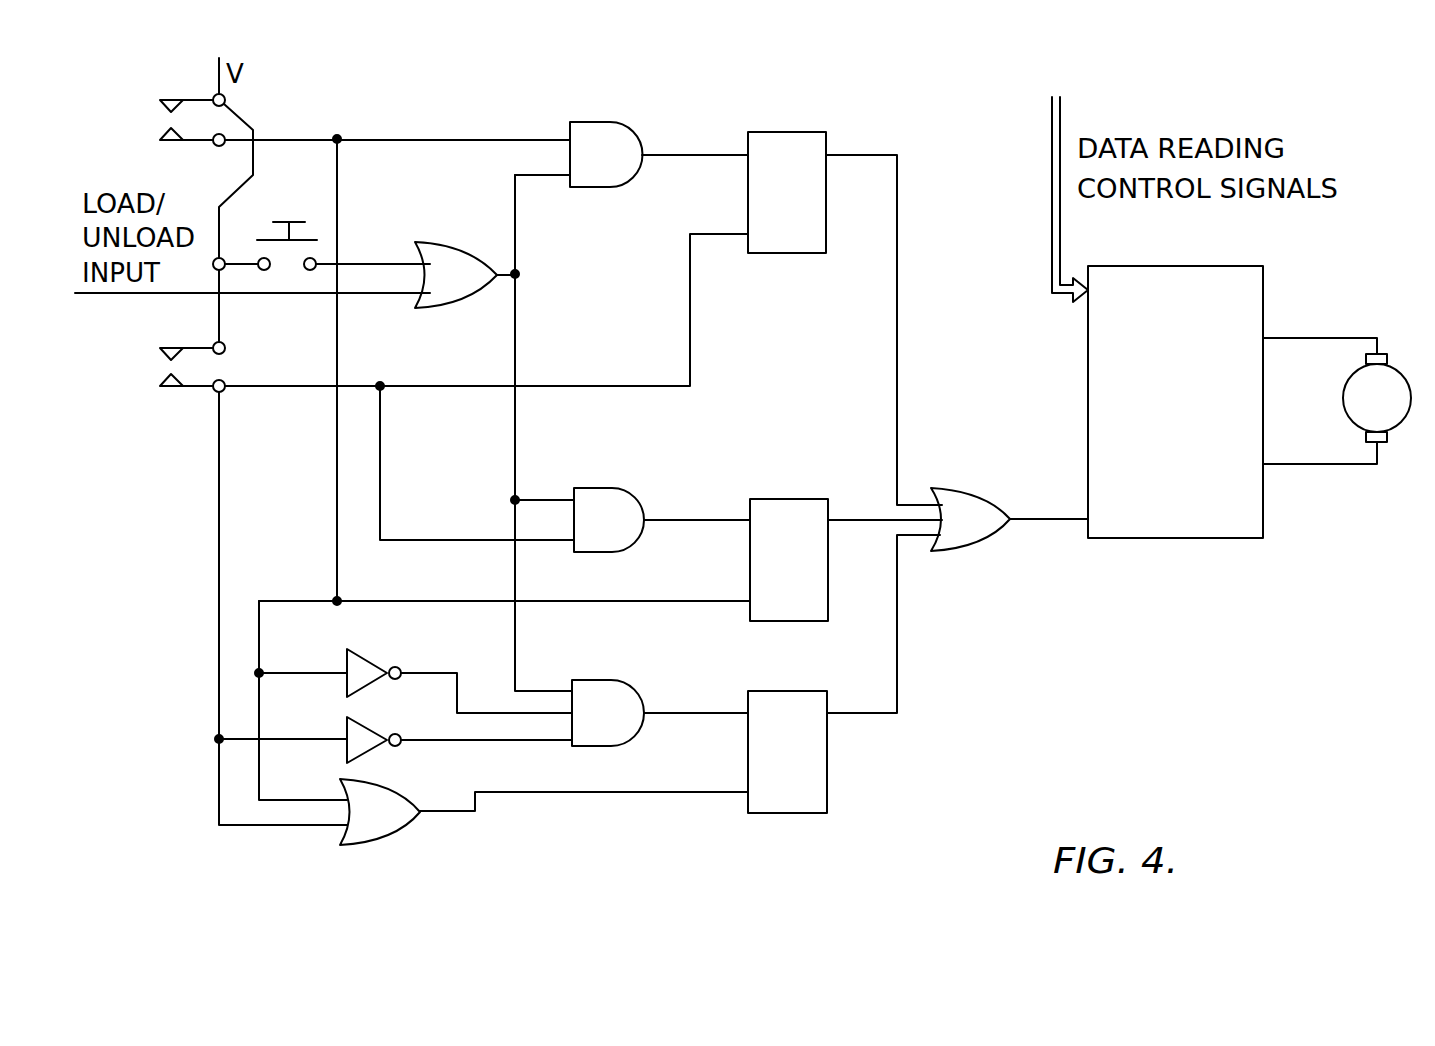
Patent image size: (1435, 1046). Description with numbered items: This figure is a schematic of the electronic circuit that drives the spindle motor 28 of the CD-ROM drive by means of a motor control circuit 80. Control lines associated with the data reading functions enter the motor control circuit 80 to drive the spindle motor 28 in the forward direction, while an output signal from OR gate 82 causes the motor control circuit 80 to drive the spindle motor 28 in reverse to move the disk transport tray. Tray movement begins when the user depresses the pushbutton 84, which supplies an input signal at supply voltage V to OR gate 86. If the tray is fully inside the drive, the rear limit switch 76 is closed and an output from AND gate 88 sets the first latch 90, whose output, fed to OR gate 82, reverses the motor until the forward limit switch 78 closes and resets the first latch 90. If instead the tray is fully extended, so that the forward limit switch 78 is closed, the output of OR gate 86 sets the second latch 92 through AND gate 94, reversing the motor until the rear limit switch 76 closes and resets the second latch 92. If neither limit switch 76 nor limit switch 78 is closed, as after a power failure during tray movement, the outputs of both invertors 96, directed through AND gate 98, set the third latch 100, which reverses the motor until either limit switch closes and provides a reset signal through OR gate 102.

The rear limit switch 76 is at (190, 100).
The forward limit switch 78 is at (200, 392).
The pushbutton 84 is at (282, 222).
The OR gate 86 is at (445, 240).
The AND gate 88 is at (612, 122).
The first latch 90 is at (765, 253).
The second latch 92 is at (760, 499).
The AND gate 94 is at (620, 488).
The invertors 96 is at (362, 718).
The AND gate 98 is at (620, 680).
The third latch 100 is at (827, 776).
The OR gate 102 is at (380, 845).
The OR gate 82 is at (945, 551).
The motor control circuit 80 is at (1205, 538).
The spindle motor 28 is at (1403, 372).